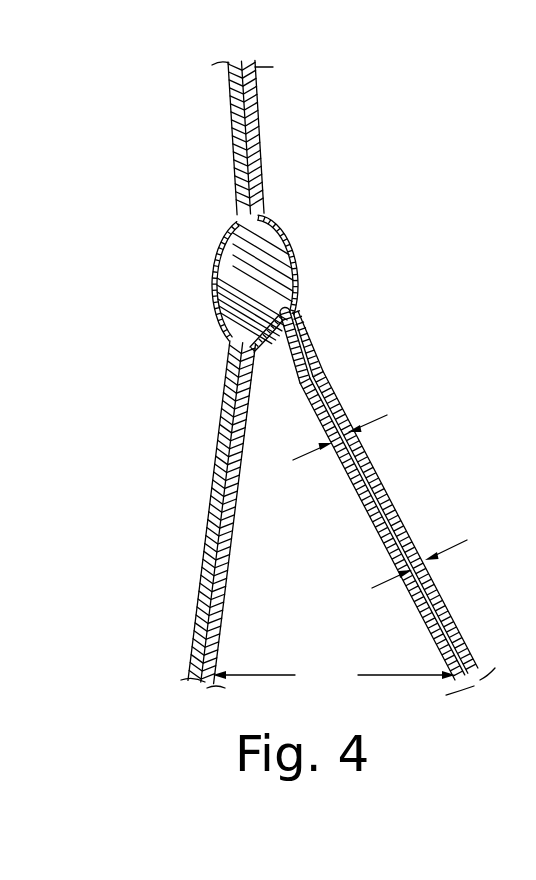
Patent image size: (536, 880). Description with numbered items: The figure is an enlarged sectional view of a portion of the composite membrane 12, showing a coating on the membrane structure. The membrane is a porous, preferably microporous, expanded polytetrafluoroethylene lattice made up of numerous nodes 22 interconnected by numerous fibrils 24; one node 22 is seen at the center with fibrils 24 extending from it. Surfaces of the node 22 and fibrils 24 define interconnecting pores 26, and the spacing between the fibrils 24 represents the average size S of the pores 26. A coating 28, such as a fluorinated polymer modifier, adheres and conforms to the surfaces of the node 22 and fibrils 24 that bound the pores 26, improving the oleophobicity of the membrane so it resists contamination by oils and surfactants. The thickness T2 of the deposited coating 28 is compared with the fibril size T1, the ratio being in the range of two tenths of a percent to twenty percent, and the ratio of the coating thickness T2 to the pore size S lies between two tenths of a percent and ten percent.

The composite membrane 12 is at (378, 134).
The node 22 is at (255, 268).
The fibril 24 is at (255, 110).
The pore 26 is at (326, 571).
The coating 28 is at (256, 155).
The fibril size T1 is at (358, 428).
The coating thickness T2 is at (436, 557).
The average pore size S is at (334, 676).